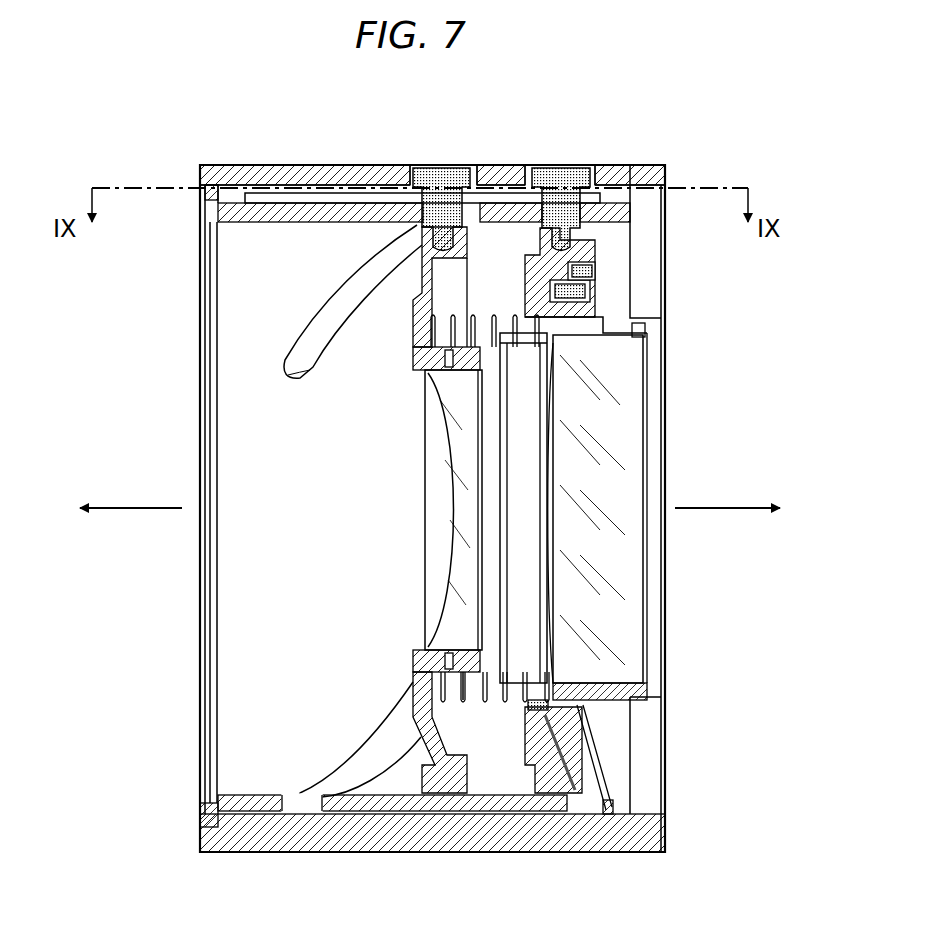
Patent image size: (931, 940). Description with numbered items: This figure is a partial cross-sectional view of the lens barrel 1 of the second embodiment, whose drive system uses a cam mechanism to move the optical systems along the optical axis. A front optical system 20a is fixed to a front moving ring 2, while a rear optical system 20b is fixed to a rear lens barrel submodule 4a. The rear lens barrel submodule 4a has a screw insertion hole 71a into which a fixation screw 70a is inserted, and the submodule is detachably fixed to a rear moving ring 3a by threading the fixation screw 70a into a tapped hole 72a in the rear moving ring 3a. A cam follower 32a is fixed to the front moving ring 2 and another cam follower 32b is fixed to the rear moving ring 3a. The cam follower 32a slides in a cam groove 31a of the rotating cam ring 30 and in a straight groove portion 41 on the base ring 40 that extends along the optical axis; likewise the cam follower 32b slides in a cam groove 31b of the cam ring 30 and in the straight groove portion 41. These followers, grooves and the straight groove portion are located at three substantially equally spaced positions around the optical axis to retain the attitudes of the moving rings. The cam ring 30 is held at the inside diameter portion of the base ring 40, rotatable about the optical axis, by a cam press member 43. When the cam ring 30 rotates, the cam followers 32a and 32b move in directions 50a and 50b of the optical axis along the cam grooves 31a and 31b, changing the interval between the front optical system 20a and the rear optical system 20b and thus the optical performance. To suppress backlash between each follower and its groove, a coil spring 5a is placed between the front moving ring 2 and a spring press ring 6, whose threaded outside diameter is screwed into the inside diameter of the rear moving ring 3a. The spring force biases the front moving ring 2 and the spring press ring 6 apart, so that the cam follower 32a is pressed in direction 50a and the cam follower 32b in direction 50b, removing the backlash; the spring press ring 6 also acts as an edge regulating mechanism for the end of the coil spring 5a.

The lens barrel 1 is at (160, 127).
The base ring 40 is at (222, 174).
The straight groove portion 41 is at (314, 184).
The cam follower 32a is at (442, 190).
The cam follower 32b is at (552, 190).
The cam press member 43 is at (203, 208).
The cam ring 30 is at (230, 221).
The tapped hole 72a is at (592, 262).
The screw insertion hole 71a is at (598, 268).
The fixation screw 70a is at (595, 297).
The direction of the optical axis 50a is at (125, 505).
The direction of the optical axis 50b is at (727, 505).
The front optical system 20a is at (455, 546).
The rear optical system 20b is at (641, 582).
The front moving ring 2 is at (416, 648).
The rear lens barrel submodule 4a is at (592, 692).
The rear moving ring 3a is at (592, 763).
The cam groove 31a is at (303, 803).
The coil spring 5a is at (466, 700).
The spring press ring 6 is at (533, 710).
The cam groove 31b is at (600, 805).